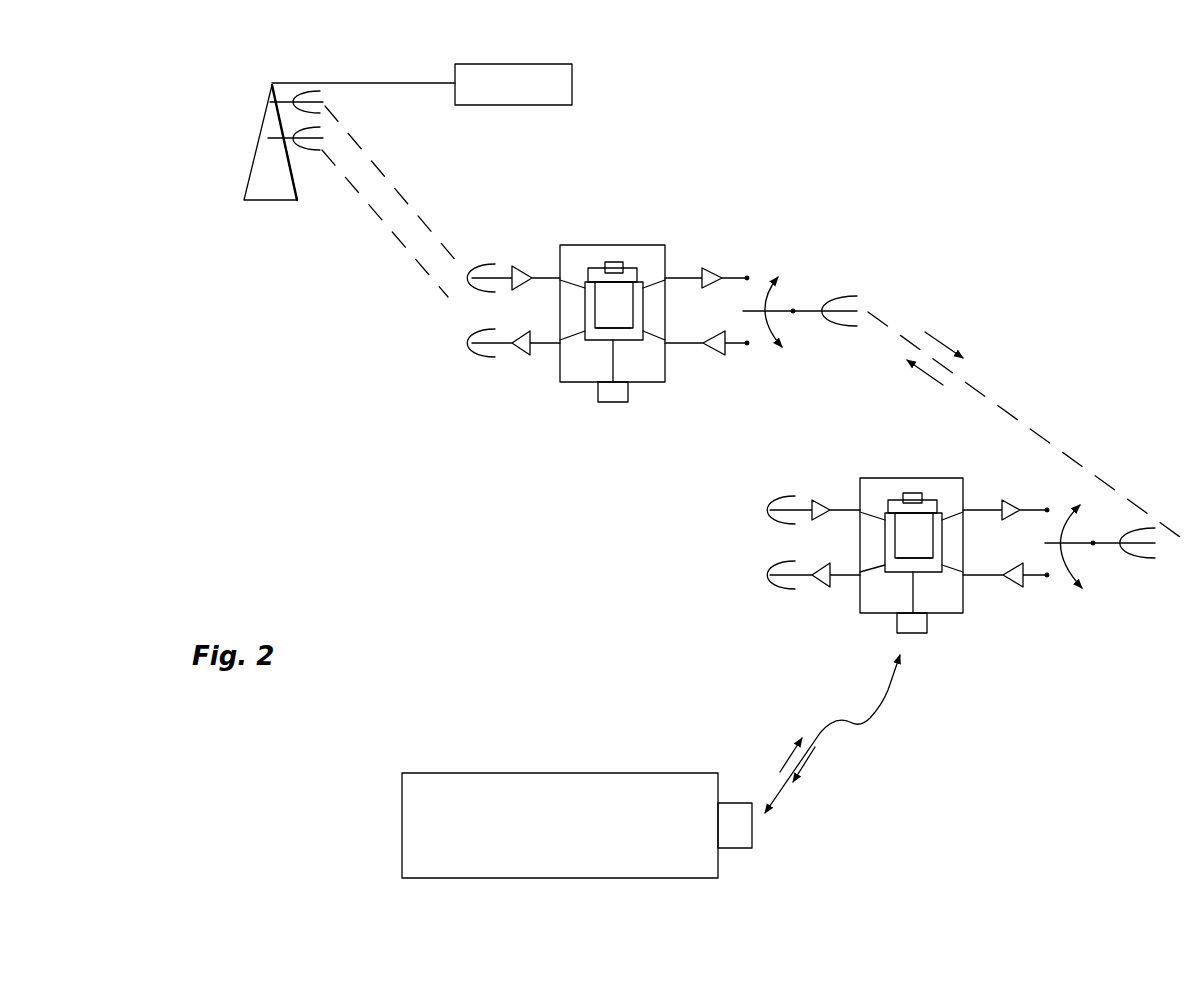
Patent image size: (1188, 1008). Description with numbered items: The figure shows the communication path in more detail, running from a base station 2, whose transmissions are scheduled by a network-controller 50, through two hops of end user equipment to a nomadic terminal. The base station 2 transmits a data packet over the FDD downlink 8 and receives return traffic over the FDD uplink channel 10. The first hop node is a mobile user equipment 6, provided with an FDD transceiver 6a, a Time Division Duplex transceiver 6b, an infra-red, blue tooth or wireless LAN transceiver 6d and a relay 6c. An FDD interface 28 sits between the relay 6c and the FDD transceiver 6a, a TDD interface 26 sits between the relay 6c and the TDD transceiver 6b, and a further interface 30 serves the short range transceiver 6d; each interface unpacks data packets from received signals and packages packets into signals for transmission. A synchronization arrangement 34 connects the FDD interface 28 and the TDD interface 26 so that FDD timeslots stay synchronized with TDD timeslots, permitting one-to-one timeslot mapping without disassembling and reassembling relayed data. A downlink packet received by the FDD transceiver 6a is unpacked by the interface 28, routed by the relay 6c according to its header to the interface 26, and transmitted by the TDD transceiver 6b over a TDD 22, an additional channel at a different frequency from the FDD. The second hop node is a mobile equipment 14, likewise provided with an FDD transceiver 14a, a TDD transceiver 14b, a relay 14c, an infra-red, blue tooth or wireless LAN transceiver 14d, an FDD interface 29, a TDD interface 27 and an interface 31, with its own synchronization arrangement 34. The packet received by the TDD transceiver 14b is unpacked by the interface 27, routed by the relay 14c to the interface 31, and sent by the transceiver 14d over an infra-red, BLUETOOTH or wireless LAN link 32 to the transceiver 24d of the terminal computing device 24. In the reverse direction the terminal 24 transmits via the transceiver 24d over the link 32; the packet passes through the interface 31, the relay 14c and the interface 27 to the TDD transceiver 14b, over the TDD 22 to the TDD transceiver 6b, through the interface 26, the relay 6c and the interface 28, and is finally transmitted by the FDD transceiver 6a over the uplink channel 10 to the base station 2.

The base station 2 is at (258, 185).
The network-controller 50 is at (422, 101).
The downlink 8 is at (423, 223).
The uplink channel 10 is at (403, 244).
The mobile user equipment 6 is at (657, 320).
The FDD transceiver 6a is at (502, 354).
The Time Division Duplex transceiver 6b is at (713, 358).
The relay 6c is at (608, 293).
The infra-red, blue tooth or wireless LAN transceiver 6d is at (613, 394).
The TDD interface 26 is at (640, 312).
The FDD interface 28 is at (592, 312).
The interface 30 is at (620, 334).
The synchronization arrangement 34 is at (615, 263).
The TDD 22 is at (992, 402).
The mobile user equipment 14 is at (953, 550).
The FDD transceiver 14a is at (805, 590).
The TDD transceiver 14b is at (1030, 590).
The relay 14c is at (918, 530).
The infra-red, blue tooth or wireless LAN transceiver 14d is at (917, 623).
The TDD interface 27 is at (937, 543).
The FDD interface 29 is at (887, 520).
The interface 31 is at (920, 565).
The terminal computing device 24 is at (616, 801).
The transceiver 24d is at (733, 832).
The infra-red, BLUETOOTH or wireless LAN link 32 is at (850, 723).